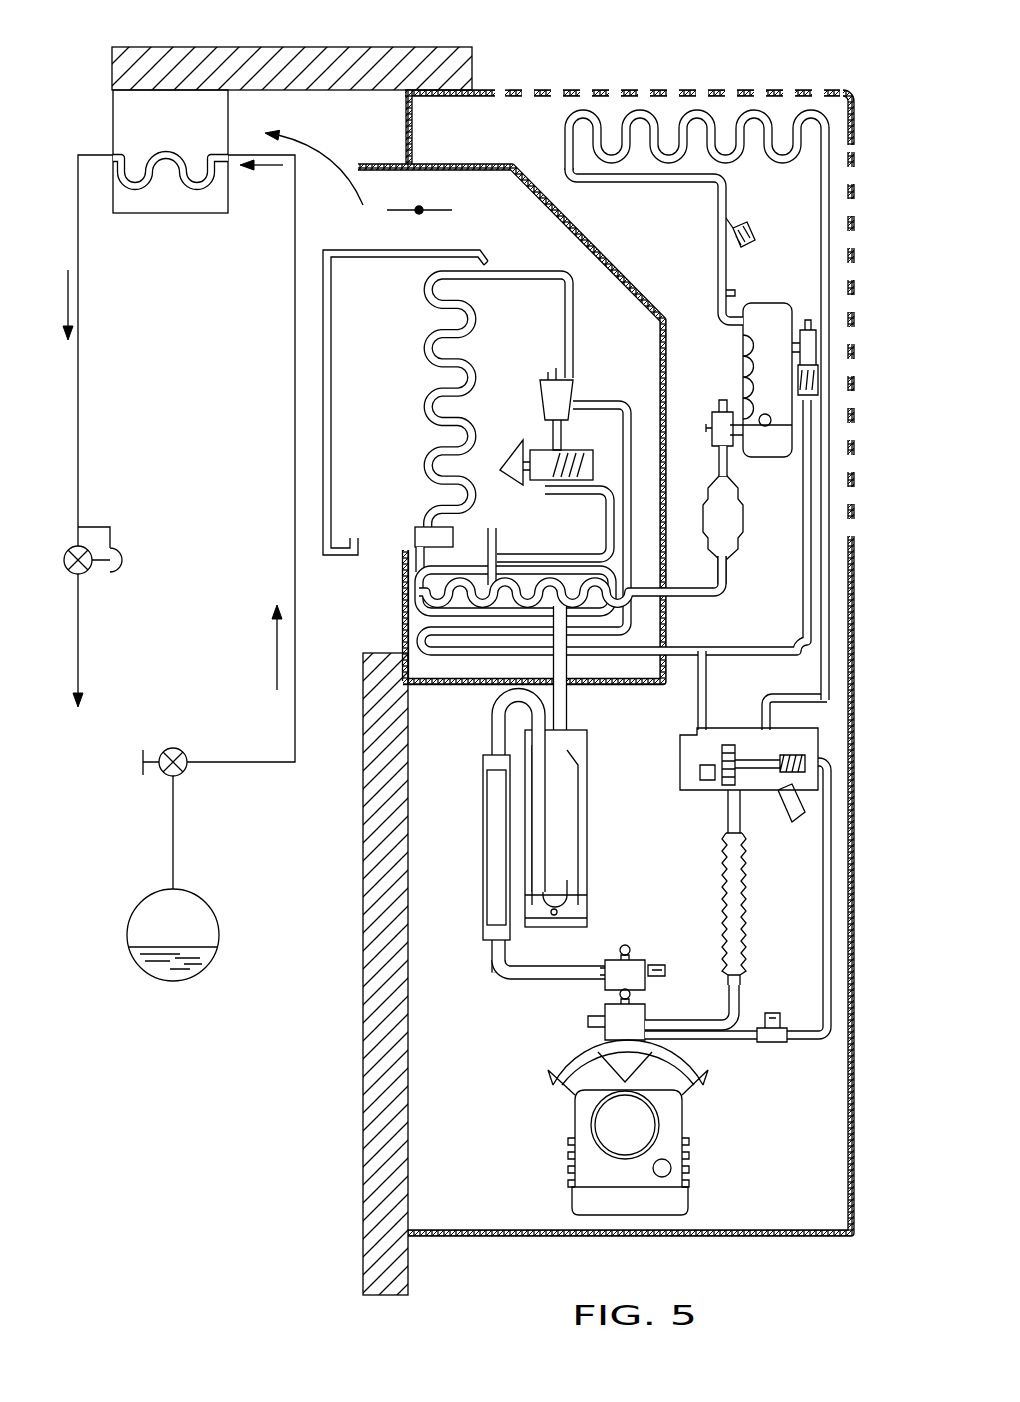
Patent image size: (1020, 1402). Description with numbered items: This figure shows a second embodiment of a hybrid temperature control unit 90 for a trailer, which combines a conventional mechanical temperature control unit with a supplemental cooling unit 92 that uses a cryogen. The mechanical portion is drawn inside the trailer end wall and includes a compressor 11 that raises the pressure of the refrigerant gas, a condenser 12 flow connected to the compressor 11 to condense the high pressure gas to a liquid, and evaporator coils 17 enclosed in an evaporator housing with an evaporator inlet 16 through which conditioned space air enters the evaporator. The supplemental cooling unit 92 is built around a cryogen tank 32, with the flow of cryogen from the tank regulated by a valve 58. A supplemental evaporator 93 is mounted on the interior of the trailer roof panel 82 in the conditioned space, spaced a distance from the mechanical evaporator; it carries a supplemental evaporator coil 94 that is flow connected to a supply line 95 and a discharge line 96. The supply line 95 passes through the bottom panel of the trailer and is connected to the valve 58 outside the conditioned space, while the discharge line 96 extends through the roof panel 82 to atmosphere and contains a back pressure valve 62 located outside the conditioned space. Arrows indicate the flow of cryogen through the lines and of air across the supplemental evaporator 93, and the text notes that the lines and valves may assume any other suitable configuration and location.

The trailer roof panel 82 is at (455, 47).
The condenser 12 is at (758, 165).
The supplemental evaporator coil 94 is at (203, 190).
The supplemental evaporator 93 is at (142, 226).
The evaporator coils 17 is at (477, 373).
The discharge line 96 is at (80, 405).
The supplemental cooling unit 92 is at (205, 330).
The supply line 95 is at (295, 462).
The back pressure valve 62 is at (75, 547).
The evaporator inlet 16 is at (386, 540).
The valve 58 is at (181, 751).
The cryogen tank 32 is at (212, 948).
The hybrid temperature control unit 90 is at (218, 1120).
The compressor 11 is at (530, 1126).